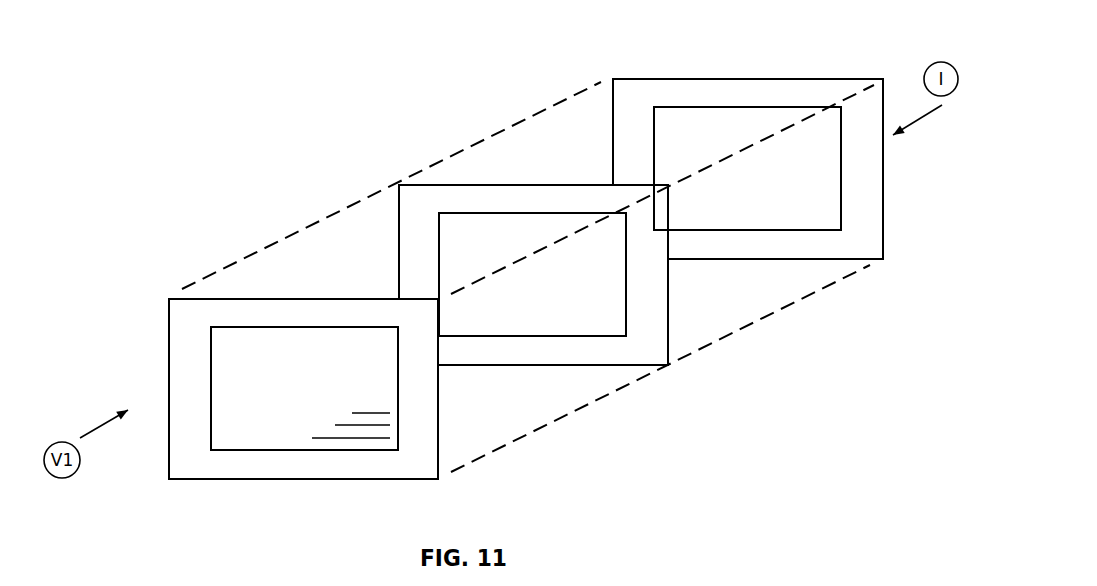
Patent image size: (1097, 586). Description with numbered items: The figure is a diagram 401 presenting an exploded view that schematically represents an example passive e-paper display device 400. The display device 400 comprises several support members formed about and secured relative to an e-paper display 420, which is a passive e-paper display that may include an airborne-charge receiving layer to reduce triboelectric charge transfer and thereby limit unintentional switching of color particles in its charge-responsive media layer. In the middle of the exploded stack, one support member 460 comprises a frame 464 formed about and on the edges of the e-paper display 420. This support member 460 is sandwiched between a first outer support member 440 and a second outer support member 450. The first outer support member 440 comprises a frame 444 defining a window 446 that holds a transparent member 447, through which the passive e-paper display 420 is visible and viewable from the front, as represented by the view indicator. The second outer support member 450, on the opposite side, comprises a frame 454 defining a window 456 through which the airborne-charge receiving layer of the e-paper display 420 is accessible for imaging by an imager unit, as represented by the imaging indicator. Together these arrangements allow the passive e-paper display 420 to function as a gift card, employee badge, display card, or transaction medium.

The passive e-paper display device 400 is at (216, 218).
The diagram 401 is at (218, 77).
The e-paper display 420 is at (597, 312).
The first outer support member 440 is at (167, 367).
The frame 444 is at (236, 466).
The window 446 is at (279, 451).
The transparent member 447 is at (322, 396).
The second outer support member 450 is at (694, 77).
The frame 454 is at (758, 88).
The window 456 is at (793, 107).
The support member 460 is at (447, 182).
The frame 464 is at (512, 205).